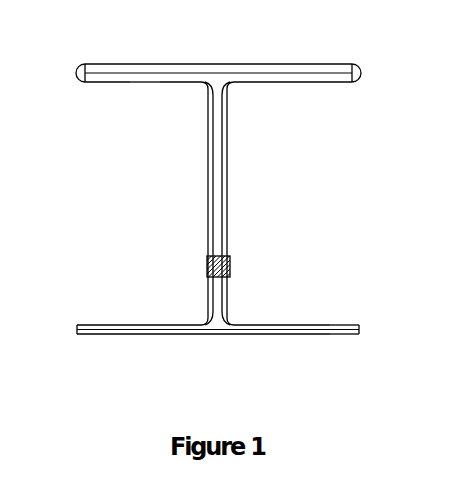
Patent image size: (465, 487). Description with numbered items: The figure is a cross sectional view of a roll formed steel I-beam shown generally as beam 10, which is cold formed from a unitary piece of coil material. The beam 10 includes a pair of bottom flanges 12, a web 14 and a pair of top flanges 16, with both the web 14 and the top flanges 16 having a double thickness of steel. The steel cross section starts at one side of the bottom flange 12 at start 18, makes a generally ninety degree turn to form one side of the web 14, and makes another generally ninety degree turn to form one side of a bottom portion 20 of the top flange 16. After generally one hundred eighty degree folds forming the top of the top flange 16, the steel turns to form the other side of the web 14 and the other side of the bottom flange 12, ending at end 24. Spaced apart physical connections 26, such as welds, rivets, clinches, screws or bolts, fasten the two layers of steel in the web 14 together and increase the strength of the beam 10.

The beam 10 is at (362, 174).
The bottom flanges 12 is at (152, 338).
The web 14 is at (228, 208).
The top flanges 16 is at (132, 63).
The start of the cross section 18 is at (100, 323).
The bottom portion of the top flange 20 is at (145, 84).
The end of the cross section 24 is at (348, 322).
The physical connections 26 is at (236, 263).